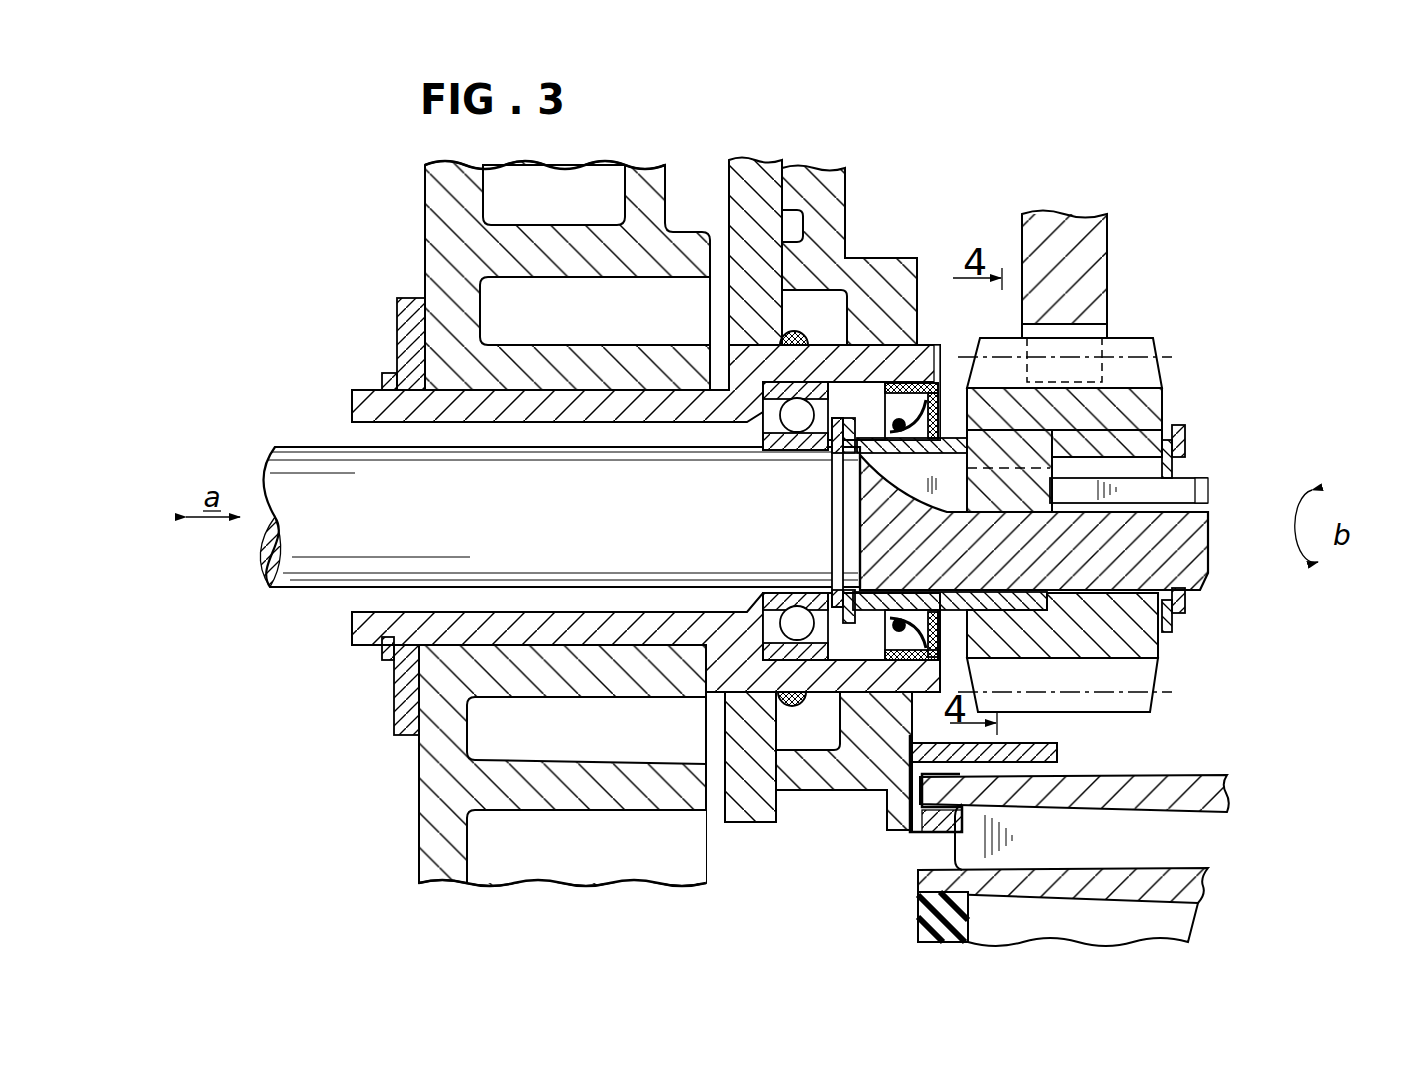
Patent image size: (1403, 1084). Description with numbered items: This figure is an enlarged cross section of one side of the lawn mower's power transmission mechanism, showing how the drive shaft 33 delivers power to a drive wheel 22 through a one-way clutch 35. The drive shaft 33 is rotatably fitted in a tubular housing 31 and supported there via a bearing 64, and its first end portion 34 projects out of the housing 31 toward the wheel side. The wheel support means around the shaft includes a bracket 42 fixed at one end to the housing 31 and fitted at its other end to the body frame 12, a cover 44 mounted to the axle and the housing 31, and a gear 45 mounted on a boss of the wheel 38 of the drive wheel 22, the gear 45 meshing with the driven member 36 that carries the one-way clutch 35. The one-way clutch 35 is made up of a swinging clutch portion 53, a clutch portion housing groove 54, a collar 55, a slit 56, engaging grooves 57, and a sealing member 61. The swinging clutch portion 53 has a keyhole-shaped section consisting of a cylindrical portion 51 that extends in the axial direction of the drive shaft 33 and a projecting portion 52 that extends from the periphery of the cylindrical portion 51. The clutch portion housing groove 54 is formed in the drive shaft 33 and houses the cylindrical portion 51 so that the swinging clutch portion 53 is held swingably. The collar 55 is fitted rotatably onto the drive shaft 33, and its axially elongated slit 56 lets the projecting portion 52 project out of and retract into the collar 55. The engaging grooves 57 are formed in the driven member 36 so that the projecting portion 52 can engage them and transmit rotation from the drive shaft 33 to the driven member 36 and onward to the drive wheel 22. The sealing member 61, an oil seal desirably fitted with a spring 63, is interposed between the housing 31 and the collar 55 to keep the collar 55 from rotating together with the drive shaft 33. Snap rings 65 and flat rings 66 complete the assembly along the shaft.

The body frame 12 is at (423, 177).
The drive wheel 22 is at (1223, 845).
The tubular housing 31 is at (362, 388).
The drive shaft 33 is at (300, 446).
The first end portion 34 is at (1212, 560).
The one-way clutch 35 is at (932, 278).
The driven member 36 is at (1130, 330).
The wheel 38 is at (1195, 778).
The bracket 42 is at (735, 160).
The cover 44 is at (848, 205).
The gear 45 is at (1110, 230).
The cylindrical portion 51 is at (1185, 472).
The projecting portion 52 is at (1042, 428).
The swinging clutch portion 53 is at (1020, 418).
The clutch portion housing groove 54 is at (1210, 488).
The collar 55 is at (945, 385).
The slit 56 is at (970, 438).
The engaging groove 57 is at (1058, 440).
The sealing member 61 is at (905, 742).
The spring 63 is at (895, 660).
The bearing 64 is at (775, 660).
The snap ring 65 is at (836, 620).
The flat ring 66 is at (848, 625).